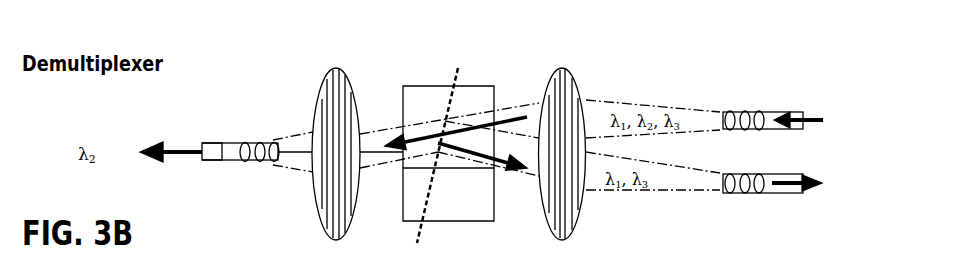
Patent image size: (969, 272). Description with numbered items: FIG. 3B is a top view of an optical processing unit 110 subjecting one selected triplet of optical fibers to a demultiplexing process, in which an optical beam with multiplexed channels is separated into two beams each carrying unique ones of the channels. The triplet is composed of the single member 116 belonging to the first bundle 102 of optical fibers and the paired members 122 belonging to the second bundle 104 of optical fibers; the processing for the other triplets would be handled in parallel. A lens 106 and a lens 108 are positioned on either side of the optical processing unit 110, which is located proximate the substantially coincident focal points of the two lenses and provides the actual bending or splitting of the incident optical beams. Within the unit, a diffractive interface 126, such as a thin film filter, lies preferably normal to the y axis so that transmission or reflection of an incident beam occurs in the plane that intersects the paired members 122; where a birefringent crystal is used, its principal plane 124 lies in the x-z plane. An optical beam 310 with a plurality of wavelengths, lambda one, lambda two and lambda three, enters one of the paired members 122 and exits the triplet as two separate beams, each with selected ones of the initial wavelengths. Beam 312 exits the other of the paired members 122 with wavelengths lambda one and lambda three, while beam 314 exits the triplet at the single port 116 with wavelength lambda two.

The first bundle 102 is at (250, 115).
The second bundle 104 is at (740, 92).
The lens 106 is at (324, 98).
The lens 108 is at (574, 110).
The optical processing unit 110 is at (421, 112).
The single member 116 is at (223, 160).
The paired members 122 is at (733, 130).
The principal plane 124 is at (500, 245).
The diffracting or reflecting interface 126 is at (456, 72).
The optical beam 310 is at (815, 113).
The beam 312 is at (784, 193).
The beam 314 is at (200, 146).